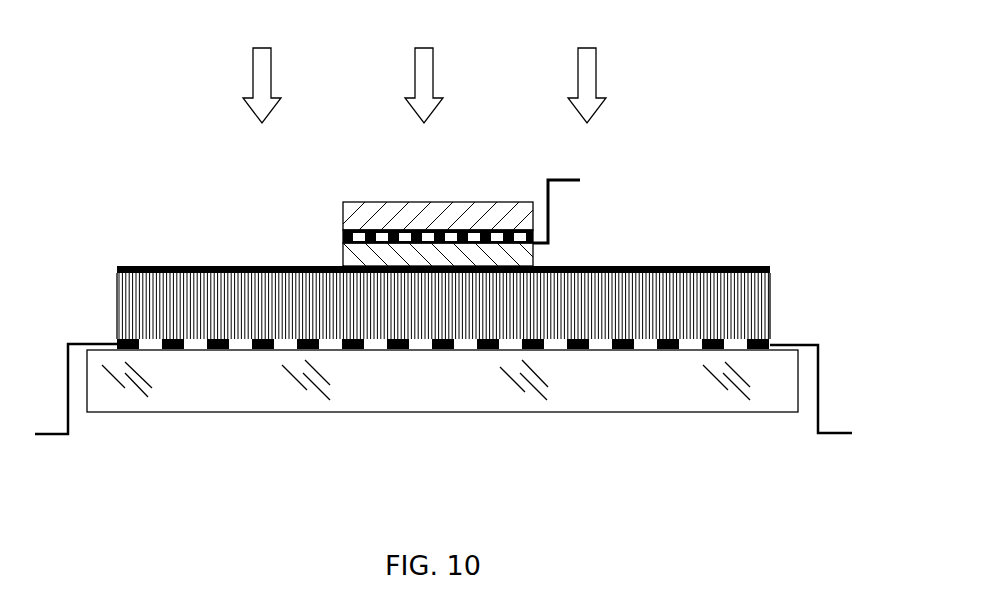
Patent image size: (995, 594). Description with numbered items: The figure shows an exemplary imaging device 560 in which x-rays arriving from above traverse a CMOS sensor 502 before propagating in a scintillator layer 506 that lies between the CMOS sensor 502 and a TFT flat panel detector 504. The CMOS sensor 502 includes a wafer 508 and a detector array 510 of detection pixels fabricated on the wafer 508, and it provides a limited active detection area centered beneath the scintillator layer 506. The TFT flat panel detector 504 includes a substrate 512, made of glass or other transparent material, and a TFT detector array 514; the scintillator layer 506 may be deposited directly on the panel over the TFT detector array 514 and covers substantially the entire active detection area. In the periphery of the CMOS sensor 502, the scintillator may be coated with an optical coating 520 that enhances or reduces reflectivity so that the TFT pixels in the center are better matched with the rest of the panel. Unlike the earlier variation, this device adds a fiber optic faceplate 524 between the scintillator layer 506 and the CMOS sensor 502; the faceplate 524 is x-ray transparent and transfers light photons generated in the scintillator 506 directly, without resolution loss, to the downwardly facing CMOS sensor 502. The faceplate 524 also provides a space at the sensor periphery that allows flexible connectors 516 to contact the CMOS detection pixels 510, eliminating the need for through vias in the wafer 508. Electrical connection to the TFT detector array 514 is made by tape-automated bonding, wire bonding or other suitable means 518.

The CMOS sensor 502 is at (423, 209).
The TFT flat panel detector 504 is at (489, 409).
The scintillator layer 506 is at (474, 267).
The wafer 508 is at (342, 208).
The detector array 510 is at (342, 232).
The substrate 512 is at (271, 412).
The TFT detector array 514 is at (173, 350).
The flexible connectors 516 is at (570, 180).
The electrical connection means 518 is at (52, 435).
The optical coating 520 is at (165, 266).
The fiber optic faceplate 524 is at (342, 255).
The imaging device 560 is at (463, 262).